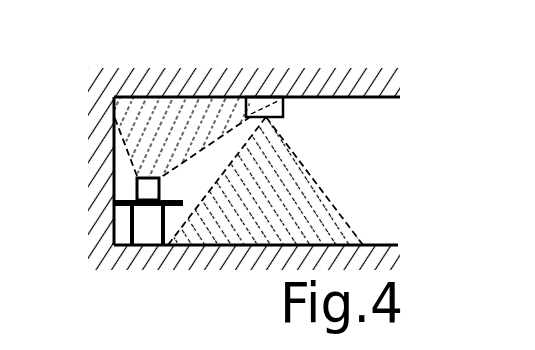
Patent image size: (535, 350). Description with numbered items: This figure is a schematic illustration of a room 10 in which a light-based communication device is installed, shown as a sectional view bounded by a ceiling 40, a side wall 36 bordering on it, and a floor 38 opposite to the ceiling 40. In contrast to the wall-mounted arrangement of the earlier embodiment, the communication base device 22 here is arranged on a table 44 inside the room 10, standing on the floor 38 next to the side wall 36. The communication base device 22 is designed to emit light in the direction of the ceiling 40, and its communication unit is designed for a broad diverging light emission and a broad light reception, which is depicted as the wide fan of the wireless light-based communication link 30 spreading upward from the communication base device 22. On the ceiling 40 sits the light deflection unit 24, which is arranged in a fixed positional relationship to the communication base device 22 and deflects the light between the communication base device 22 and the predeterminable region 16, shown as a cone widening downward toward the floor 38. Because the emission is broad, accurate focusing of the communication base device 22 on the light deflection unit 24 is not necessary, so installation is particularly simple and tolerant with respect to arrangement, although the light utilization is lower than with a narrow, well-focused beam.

The room 10 is at (358, 76).
The predeterminable region 16 is at (307, 200).
The communication base device 22 is at (128, 185).
The light deflection unit 24 is at (280, 80).
The wireless light-based communication link 30 is at (200, 123).
The side wall 36 is at (112, 195).
The floor 38 is at (380, 252).
The ceiling 40 is at (378, 96).
The table 44 is at (115, 223).